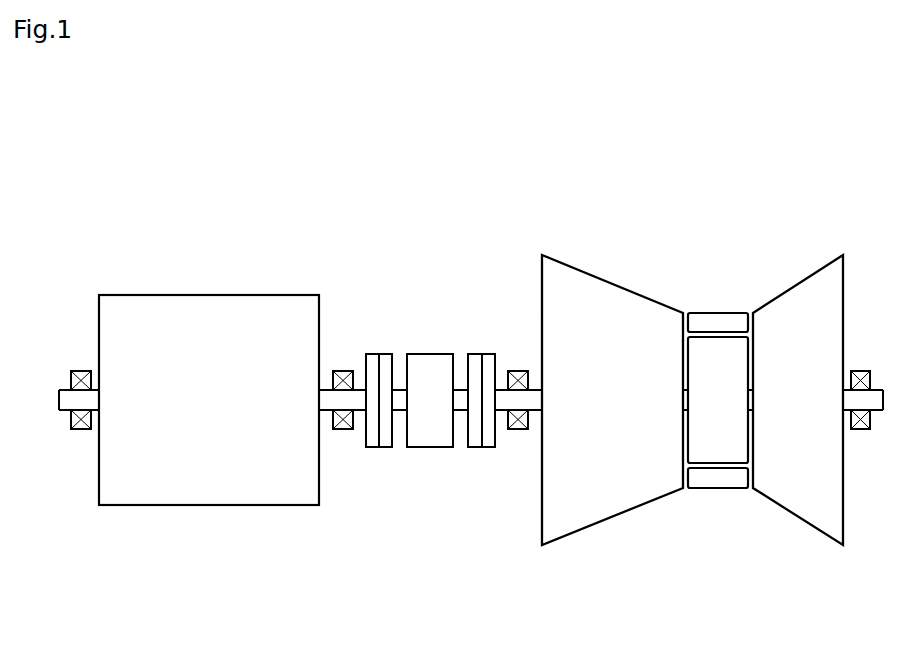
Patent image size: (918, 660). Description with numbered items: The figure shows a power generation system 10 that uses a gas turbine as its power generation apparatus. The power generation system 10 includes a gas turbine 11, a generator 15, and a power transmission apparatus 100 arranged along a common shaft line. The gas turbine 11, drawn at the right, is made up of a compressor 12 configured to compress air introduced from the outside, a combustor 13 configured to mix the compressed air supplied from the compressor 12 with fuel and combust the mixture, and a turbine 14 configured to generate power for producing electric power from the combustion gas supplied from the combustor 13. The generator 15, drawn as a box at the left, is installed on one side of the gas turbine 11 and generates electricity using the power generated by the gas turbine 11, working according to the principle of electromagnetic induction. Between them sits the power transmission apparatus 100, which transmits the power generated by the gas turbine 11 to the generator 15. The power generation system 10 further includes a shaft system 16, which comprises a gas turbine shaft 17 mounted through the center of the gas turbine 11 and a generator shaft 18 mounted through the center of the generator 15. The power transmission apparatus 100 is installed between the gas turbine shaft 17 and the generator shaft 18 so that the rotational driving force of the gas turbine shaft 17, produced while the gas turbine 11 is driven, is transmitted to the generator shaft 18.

The power generation system 10 is at (108, 152).
The gas turbine 11 is at (692, 331).
The compressor 12 is at (618, 283).
The combustor 13 is at (710, 313).
The turbine 14 is at (798, 364).
The generator 15 is at (198, 295).
The shaft system 16 is at (428, 501).
The gas turbine shaft 17 is at (510, 399).
The generator shaft 18 is at (334, 399).
The power transmission apparatus 100 is at (427, 354).